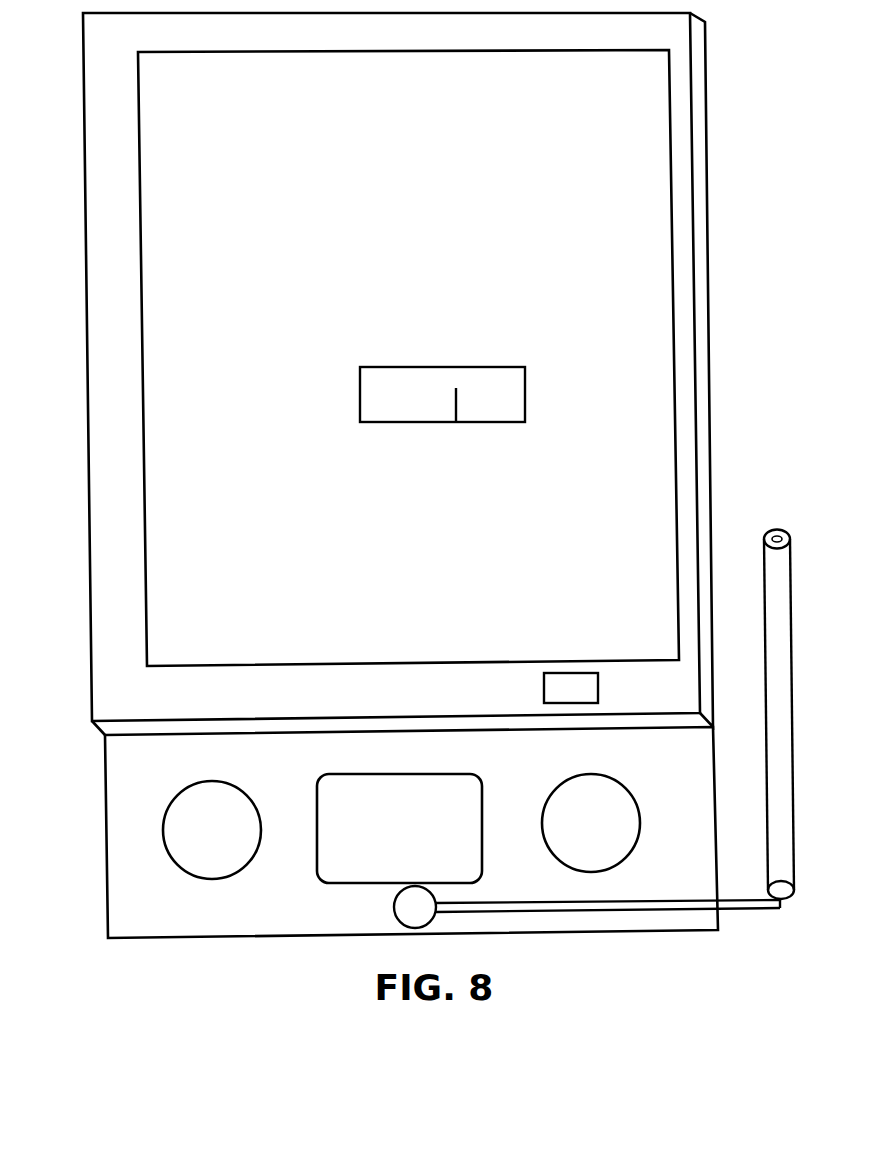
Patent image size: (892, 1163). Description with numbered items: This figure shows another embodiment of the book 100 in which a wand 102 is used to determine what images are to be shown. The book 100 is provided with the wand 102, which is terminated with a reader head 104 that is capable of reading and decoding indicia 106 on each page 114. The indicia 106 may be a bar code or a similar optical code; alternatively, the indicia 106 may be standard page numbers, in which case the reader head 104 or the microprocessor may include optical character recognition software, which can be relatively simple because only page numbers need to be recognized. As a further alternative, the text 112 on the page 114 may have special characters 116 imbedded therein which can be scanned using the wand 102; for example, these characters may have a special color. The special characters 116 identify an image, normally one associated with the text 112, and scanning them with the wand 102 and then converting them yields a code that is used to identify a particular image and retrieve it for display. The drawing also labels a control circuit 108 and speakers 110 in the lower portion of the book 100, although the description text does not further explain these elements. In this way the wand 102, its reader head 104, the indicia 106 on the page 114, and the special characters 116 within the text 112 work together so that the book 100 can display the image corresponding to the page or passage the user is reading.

The book 100 is at (80, 472).
The wand 102 is at (830, 608).
The reader head 104 is at (776, 532).
The indicia 106 is at (553, 700).
The control circuit 108 is at (382, 870).
The speaker 110 is at (194, 860).
The text 112 is at (178, 528).
The page 114 is at (91, 593).
The special characters 116 is at (409, 408).